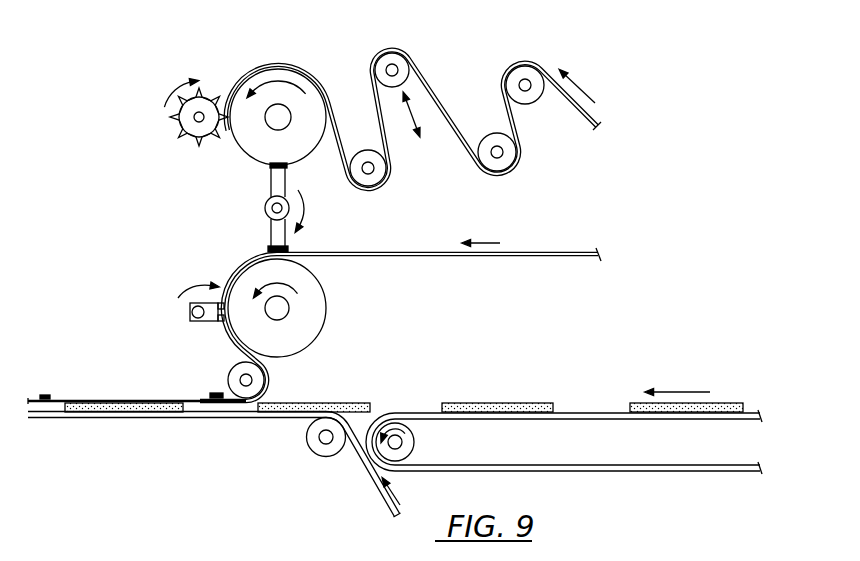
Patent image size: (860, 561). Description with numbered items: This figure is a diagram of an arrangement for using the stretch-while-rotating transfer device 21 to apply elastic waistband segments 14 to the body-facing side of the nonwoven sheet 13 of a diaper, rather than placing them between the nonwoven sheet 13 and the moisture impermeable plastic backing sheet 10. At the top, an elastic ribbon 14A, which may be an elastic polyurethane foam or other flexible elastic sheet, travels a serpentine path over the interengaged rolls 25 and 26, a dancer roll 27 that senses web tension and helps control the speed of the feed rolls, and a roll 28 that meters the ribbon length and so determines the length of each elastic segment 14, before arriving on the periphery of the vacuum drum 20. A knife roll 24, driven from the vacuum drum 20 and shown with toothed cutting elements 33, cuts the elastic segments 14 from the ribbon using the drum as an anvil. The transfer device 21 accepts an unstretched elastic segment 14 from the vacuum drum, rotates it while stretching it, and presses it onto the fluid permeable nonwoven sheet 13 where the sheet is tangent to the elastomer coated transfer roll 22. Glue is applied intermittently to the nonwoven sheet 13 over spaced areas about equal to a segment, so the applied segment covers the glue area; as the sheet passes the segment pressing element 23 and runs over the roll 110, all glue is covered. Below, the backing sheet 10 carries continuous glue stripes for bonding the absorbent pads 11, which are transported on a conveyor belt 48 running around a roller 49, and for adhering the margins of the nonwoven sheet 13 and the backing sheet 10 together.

The plastic backing sheet 10 is at (153, 418).
The absorbent pads 11 is at (128, 409).
The nonwoven sheet 13 is at (538, 252).
The elastic segment 14 is at (268, 165).
The elastic ribbon 14A is at (336, 124).
The vacuum drum 20 is at (296, 41).
The elastic segment transfer device 21 is at (262, 207).
The transfer roll 22 is at (321, 299).
The segment pressing element 23 is at (190, 308).
The knife roll 24 is at (196, 131).
The roll 25 is at (519, 66).
The roll 26 is at (505, 162).
The dancer roll 27 is at (411, 22).
The roll 28 is at (389, 174).
The gear teeth 33 is at (199, 89).
The conveyor belt 48 is at (657, 474).
The roller 49 is at (416, 446).
The roll 110 is at (237, 361).